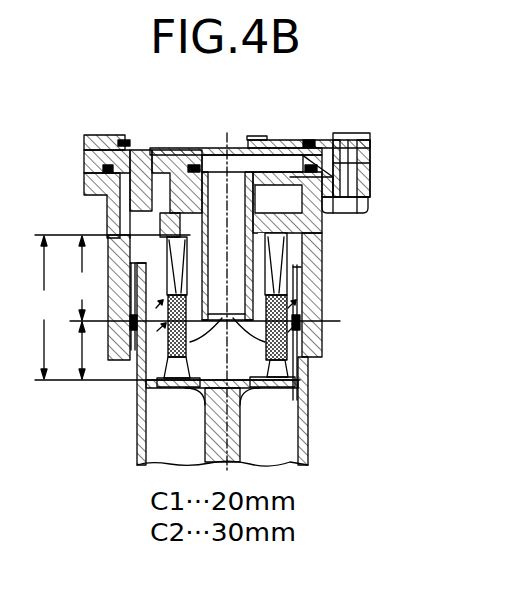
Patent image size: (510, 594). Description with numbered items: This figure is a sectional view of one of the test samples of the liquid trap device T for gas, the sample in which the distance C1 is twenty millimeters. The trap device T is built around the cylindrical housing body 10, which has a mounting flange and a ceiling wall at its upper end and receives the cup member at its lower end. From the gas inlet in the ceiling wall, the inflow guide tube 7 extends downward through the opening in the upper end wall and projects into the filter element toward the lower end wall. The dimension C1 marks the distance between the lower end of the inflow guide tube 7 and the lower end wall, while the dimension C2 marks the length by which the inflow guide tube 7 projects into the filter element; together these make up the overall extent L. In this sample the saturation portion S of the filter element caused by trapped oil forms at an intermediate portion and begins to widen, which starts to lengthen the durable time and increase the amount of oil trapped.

The inflow guide tube 7 is at (206, 200).
The housing body 10 is at (278, 262).
The liquid trap device for gas T is at (310, 136).
The saturation portion S is at (287, 362).
The overall length dimension L is at (167, 307).
The distance between lower end of inflow guide tube and lower end wall C1 is at (80, 363).
The length by which inflow guide tube projects into filter element C2 is at (203, 278).